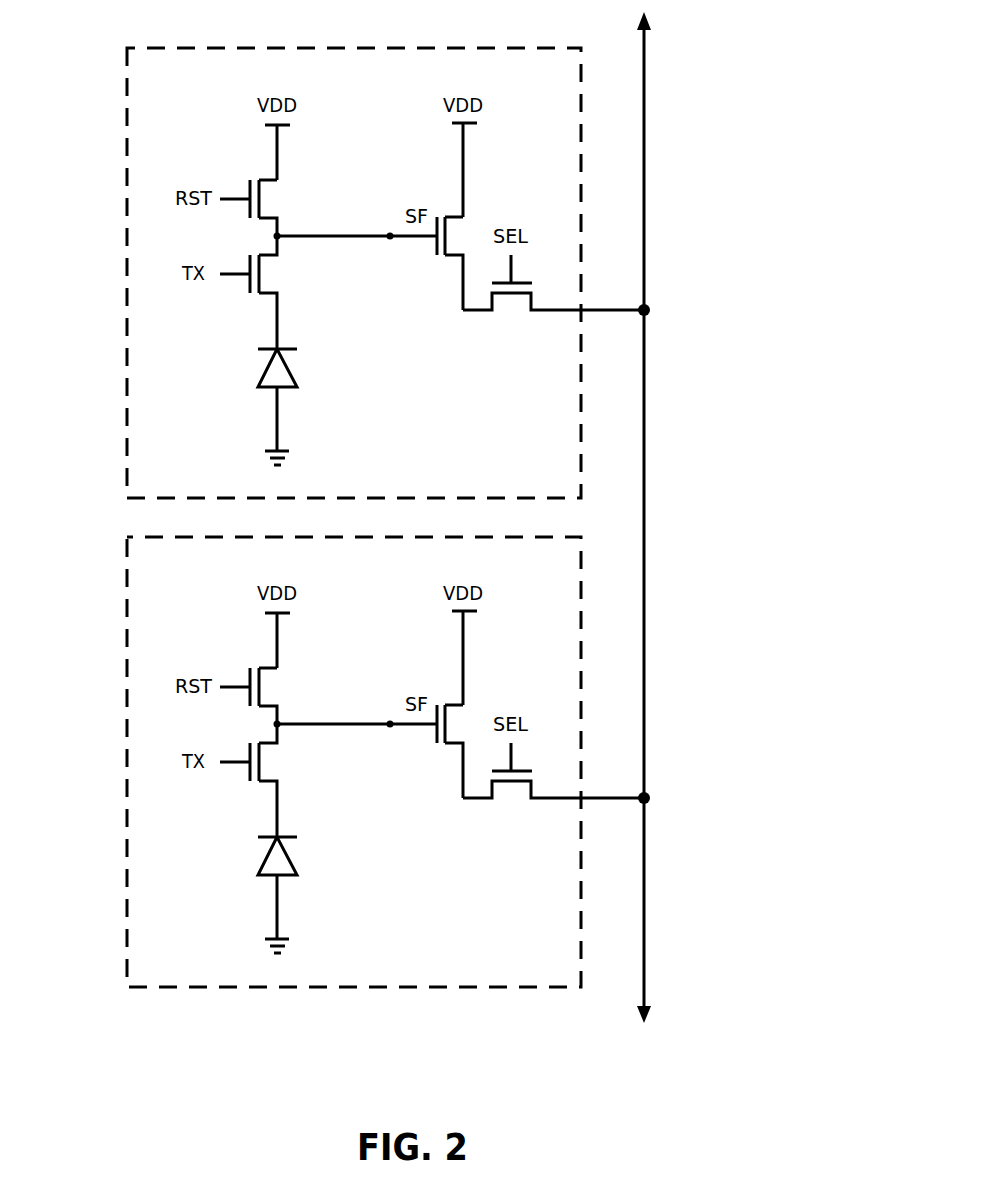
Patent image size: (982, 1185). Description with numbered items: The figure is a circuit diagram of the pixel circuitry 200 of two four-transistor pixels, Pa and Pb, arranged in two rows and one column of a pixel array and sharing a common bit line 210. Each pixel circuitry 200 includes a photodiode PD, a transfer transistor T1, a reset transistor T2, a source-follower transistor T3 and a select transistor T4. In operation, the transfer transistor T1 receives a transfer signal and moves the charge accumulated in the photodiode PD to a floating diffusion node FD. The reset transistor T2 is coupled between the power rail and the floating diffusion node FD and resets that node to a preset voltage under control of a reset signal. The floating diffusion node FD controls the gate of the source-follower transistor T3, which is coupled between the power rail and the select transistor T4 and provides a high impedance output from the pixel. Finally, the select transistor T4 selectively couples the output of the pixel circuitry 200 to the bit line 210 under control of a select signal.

The pixel circuitry 200 is at (127, 90).
The bit line 210 is at (644, 225).
The transfer transistor T1 is at (269, 536).
The reset transistor T2 is at (269, 452).
The source-follower transistor T3 is at (456, 507).
The select transistor T4 is at (553, 551).
The photodiode PD is at (260, 613).
The floating diffusion node FD is at (356, 466).